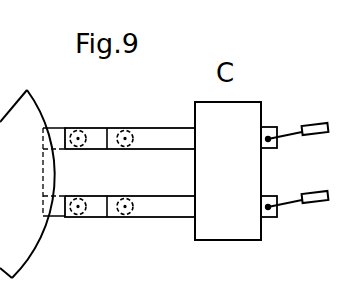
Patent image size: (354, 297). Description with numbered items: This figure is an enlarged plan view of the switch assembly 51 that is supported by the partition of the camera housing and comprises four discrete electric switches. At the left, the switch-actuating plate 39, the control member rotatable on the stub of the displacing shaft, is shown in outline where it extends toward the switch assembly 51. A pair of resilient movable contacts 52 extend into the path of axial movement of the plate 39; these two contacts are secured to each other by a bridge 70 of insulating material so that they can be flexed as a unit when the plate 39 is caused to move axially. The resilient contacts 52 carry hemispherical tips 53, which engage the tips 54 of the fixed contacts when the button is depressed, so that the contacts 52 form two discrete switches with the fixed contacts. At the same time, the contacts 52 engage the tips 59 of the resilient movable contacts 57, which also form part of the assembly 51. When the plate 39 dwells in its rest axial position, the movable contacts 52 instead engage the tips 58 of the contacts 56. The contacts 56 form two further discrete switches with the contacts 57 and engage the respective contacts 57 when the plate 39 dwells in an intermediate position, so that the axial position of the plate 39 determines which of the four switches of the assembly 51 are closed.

The switch-actuating plate 39 is at (22, 118).
The bridge 70 is at (62, 188).
The resilient movable contacts 52 is at (100, 213).
The hemispherical tips 53 is at (99, 200).
The tips of fixed contacts 54 is at (94, 218).
The tips of contacts 58 is at (150, 148).
The tips of resilient movable contacts 59 is at (129, 210).
The contacts 56 is at (134, 204).
The resilient movable contacts 57 is at (183, 138).
The switch assembly 51 is at (242, 220).